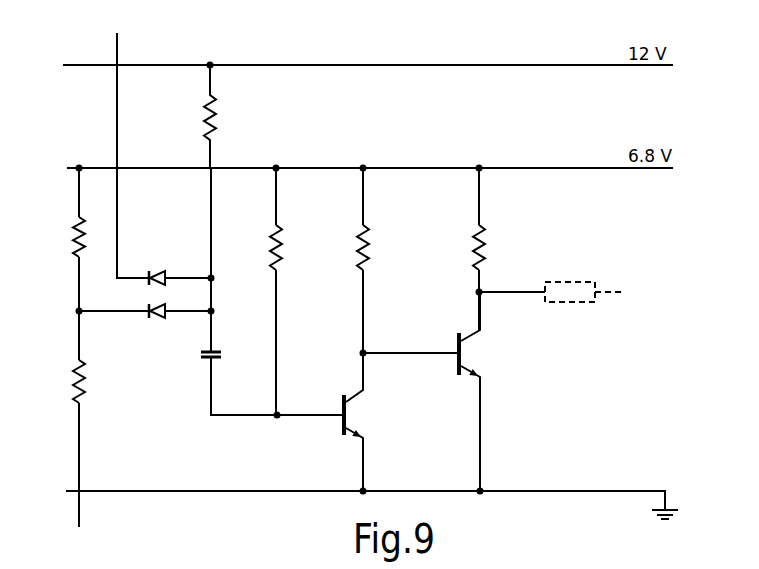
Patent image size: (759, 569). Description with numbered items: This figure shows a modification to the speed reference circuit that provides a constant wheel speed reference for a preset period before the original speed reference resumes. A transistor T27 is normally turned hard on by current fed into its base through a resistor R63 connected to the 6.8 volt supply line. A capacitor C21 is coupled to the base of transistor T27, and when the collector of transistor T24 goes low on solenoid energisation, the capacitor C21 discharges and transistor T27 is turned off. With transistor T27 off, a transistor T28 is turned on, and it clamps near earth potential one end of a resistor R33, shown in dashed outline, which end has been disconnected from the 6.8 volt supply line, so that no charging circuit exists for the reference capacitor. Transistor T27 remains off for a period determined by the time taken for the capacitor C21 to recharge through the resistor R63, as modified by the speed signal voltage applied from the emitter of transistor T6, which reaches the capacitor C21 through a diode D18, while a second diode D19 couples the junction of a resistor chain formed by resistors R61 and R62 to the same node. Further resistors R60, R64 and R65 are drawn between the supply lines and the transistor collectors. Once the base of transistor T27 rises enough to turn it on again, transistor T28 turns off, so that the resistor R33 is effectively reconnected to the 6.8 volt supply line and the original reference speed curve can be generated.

The transistor T6 is at (143, 42).
The transistor T24 is at (81, 507).
The resistor R60 is at (217, 124).
The resistor R61 is at (72, 254).
The resistor R62 is at (72, 391).
The resistor R63 is at (283, 263).
The resistor R64 is at (370, 263).
The resistor R65 is at (486, 263).
The resistor R33 is at (557, 286).
The diode D18 is at (153, 270).
The diode D19 is at (153, 318).
The capacitor C21 is at (222, 358).
The transistor T27 is at (347, 417).
The transistor T28 is at (465, 351).